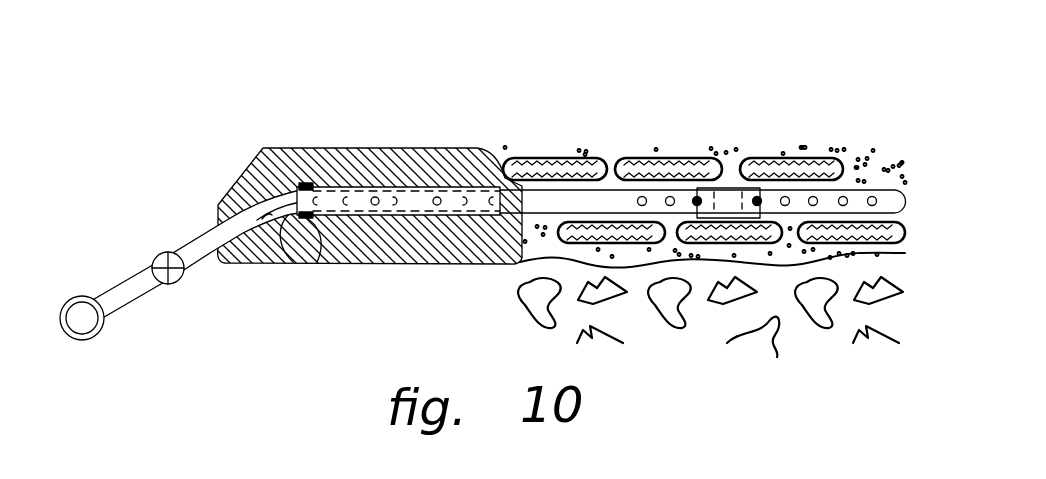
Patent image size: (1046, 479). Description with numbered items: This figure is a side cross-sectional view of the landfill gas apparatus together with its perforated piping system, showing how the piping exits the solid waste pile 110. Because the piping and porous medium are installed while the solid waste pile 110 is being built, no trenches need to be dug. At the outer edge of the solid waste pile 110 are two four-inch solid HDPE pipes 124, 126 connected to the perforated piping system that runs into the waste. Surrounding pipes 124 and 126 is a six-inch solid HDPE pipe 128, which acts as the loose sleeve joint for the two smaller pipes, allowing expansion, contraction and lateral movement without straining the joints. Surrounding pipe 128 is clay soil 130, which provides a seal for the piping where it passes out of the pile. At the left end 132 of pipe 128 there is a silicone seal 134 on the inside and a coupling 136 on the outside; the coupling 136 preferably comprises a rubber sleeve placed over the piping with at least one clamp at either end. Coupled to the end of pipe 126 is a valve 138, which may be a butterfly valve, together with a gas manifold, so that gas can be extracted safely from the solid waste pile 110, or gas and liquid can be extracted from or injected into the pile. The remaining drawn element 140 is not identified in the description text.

The solid waste pile 110 is at (833, 359).
The solid HDPE pipe 124 is at (437, 185).
The solid HDPE pipe 126 is at (200, 228).
The solid HDPE pipe 128 is at (378, 168).
The clay soil 130 is at (276, 162).
The left end 132 is at (229, 255).
The silicone seal 134 is at (303, 264).
The coupling 136 is at (262, 262).
The valve 138 is at (157, 258).
The connector 140 is at (85, 340).